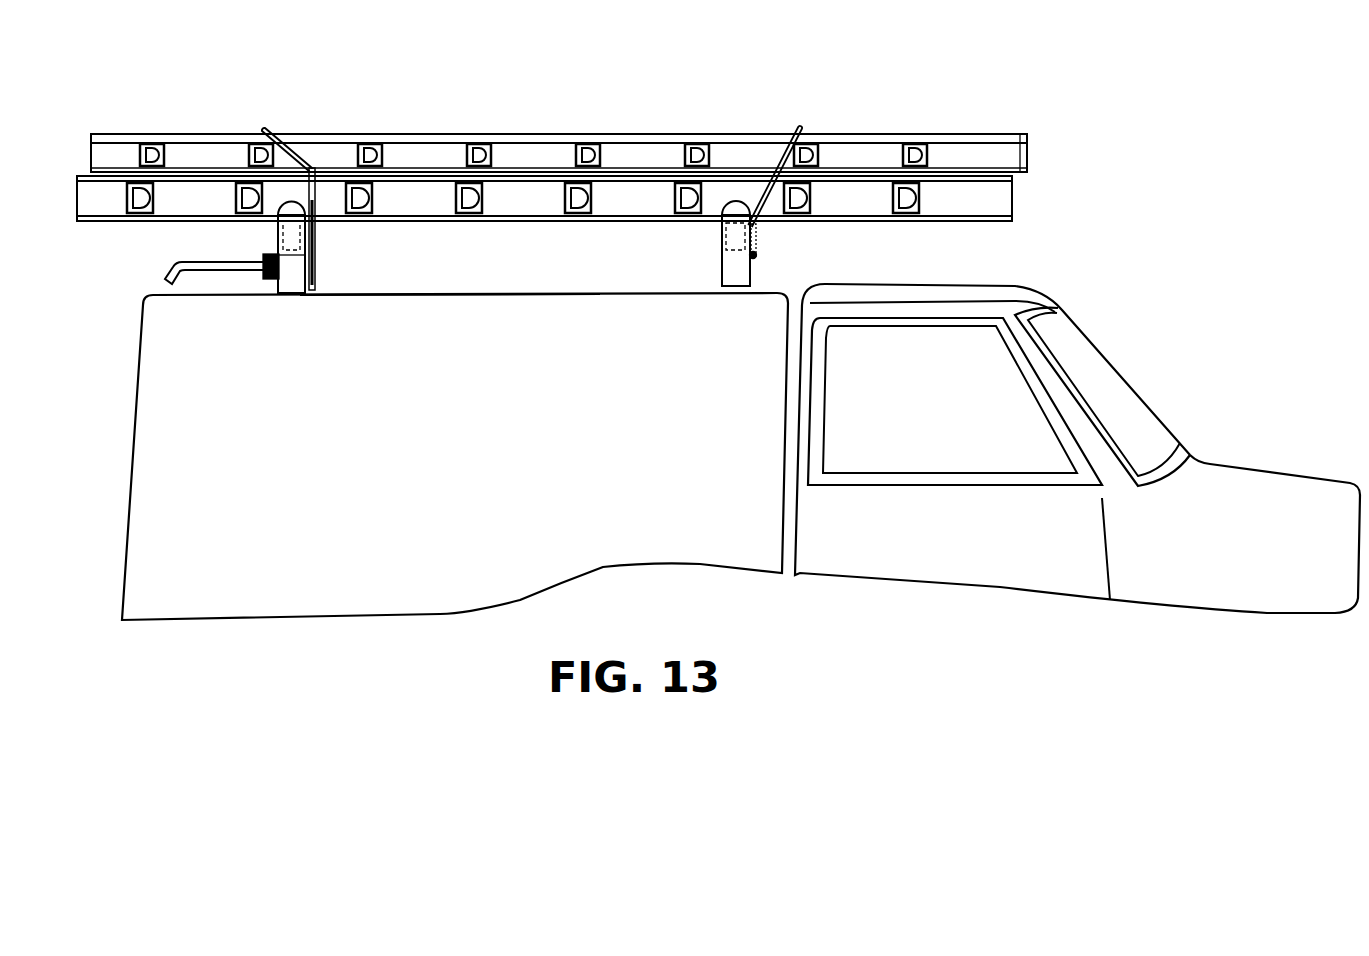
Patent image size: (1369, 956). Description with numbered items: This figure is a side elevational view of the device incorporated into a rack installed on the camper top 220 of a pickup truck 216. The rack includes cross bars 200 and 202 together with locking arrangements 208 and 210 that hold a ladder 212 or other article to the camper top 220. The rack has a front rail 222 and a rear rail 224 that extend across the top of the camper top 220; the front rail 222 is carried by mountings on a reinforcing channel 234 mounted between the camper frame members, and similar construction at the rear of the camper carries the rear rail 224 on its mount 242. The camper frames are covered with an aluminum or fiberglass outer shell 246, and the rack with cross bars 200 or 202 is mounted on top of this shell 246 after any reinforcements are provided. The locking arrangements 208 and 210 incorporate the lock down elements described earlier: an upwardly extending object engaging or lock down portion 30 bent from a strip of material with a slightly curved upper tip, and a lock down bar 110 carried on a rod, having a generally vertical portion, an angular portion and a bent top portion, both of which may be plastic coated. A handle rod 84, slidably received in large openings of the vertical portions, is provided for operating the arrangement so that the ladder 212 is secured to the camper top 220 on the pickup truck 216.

The lock down portion 30 is at (784, 126).
The handle rod 84 is at (188, 262).
The lock down bar 110 is at (284, 160).
The cross bar 200 is at (359, 275).
The cross bar 202 is at (762, 265).
The locking arrangement 208 is at (315, 152).
The locking arrangement 210 is at (766, 160).
The ladder 212 is at (538, 158).
The pickup truck 216 is at (990, 546).
The camper top 220 is at (124, 479).
The front rail 222 is at (722, 240).
The rear rail 224 is at (303, 237).
The reinforcing channel 234 is at (728, 268).
The mount 242 is at (293, 296).
The outer shell 246 is at (608, 463).